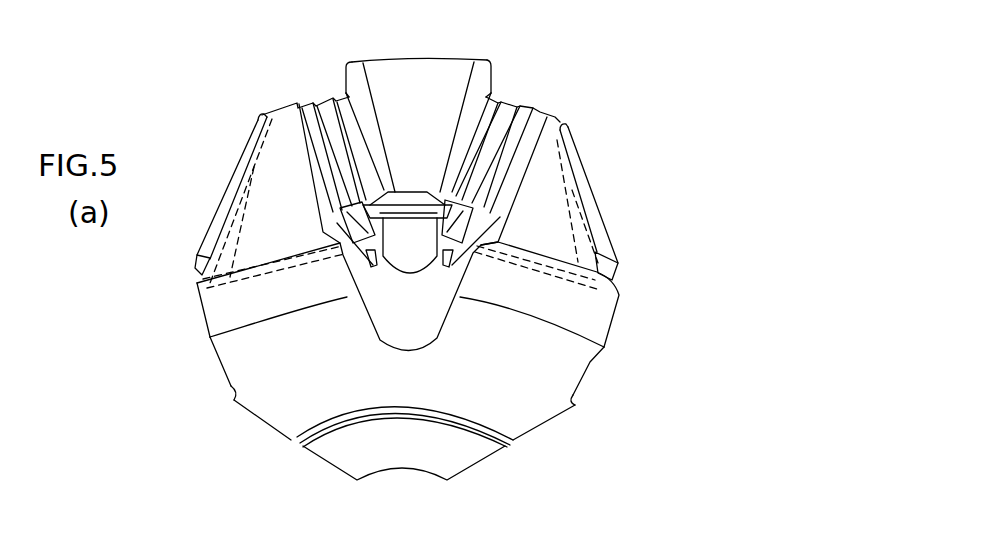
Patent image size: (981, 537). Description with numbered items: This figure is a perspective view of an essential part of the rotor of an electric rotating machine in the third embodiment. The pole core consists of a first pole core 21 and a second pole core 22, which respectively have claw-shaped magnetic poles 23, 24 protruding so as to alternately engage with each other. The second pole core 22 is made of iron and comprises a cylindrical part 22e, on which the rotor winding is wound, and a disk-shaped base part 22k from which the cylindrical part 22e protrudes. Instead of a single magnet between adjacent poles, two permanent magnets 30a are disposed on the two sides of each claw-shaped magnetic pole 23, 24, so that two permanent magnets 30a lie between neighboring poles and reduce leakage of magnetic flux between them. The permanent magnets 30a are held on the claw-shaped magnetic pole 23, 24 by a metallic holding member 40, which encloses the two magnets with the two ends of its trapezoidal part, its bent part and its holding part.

The first pole core 21 is at (461, 59).
The second pole core 22 is at (204, 317).
The cylindrical part 22e is at (330, 448).
The disk-shaped base part 22k is at (253, 402).
The claw-shaped magnetic pole 23 is at (413, 61).
The claw-shaped magnetic pole 24 is at (285, 115).
The permanent magnet 30a is at (347, 214).
The holding member 40 is at (488, 97).